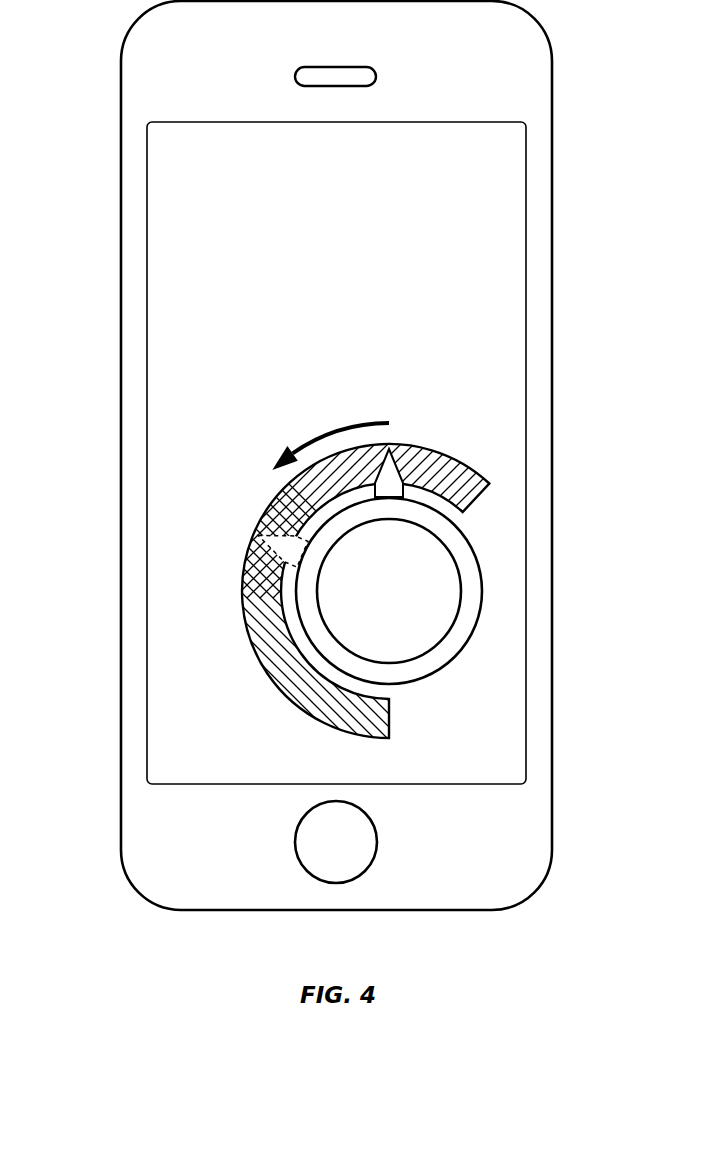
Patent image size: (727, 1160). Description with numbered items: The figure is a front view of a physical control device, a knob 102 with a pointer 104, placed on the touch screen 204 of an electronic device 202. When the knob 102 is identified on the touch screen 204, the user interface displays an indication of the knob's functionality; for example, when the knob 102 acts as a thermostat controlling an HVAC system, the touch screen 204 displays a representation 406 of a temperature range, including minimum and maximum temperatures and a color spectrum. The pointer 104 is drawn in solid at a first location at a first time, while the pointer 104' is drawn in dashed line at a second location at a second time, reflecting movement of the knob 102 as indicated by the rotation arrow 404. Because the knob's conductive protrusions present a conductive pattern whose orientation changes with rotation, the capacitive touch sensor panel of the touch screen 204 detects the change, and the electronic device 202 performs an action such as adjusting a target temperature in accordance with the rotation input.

The electronic device 202 is at (152, 85).
The touch screen 204 is at (165, 213).
The knob 102 is at (483, 590).
The pointer 104 is at (377, 606).
The pointer 104' is at (241, 540).
The rotation arrow 404 is at (330, 434).
The representation of temperature range 406 is at (275, 701).